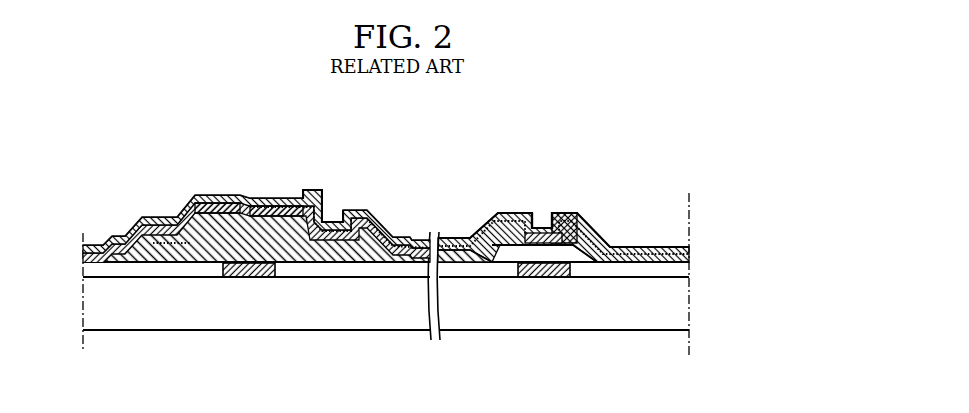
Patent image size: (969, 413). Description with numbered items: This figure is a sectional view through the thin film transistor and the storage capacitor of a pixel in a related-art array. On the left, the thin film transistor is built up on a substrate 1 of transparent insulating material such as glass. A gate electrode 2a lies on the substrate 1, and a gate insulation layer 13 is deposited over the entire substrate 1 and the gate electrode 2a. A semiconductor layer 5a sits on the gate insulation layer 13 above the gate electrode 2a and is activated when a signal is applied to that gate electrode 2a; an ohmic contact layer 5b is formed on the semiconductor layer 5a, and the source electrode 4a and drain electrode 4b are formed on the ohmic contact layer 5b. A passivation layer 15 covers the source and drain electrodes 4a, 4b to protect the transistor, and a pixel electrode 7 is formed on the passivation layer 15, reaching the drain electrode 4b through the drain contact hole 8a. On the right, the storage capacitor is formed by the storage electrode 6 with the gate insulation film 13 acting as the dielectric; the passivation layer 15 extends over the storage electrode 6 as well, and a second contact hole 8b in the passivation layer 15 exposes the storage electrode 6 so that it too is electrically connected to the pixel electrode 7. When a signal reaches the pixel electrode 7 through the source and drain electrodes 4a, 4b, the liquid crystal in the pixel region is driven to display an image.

The substrate 1 is at (690, 316).
The gate electrode 2a is at (250, 278).
The storage electrode 6 is at (545, 278).
The gate insulation layer 13 is at (83, 273).
The passivation layer 15 is at (83, 255).
The source electrode 4a is at (152, 212).
The drain electrode 4b is at (315, 203).
The semiconductor layer 5a is at (247, 230).
The ohmic contact layer 5b is at (217, 207).
The pixel electrode 7 is at (452, 245).
The drain contact hole 8a is at (333, 208).
The contact hole 8b is at (542, 220).